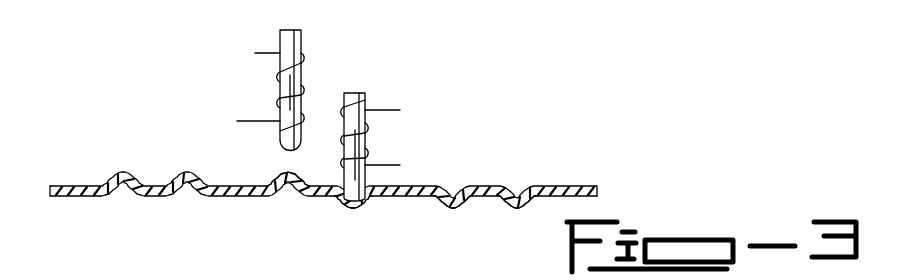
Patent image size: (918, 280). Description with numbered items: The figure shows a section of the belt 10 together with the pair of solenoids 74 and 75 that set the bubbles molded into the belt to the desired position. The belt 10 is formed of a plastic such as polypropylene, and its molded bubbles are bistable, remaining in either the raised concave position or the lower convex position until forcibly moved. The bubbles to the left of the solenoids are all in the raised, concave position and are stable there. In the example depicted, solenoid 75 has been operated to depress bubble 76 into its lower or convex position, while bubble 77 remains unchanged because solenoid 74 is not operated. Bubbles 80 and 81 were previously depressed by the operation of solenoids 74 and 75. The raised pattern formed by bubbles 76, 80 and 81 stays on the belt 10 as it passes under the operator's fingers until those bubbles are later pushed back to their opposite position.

The belt 10 is at (81, 188).
The solenoid 74 is at (282, 42).
The solenoid 75 is at (357, 100).
The bubble 76 is at (361, 208).
The bubble 77 is at (278, 170).
The bubble 80 is at (455, 208).
The bubble 81 is at (519, 208).